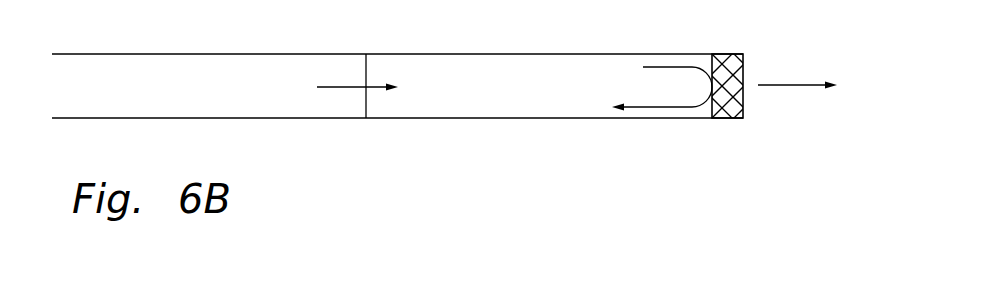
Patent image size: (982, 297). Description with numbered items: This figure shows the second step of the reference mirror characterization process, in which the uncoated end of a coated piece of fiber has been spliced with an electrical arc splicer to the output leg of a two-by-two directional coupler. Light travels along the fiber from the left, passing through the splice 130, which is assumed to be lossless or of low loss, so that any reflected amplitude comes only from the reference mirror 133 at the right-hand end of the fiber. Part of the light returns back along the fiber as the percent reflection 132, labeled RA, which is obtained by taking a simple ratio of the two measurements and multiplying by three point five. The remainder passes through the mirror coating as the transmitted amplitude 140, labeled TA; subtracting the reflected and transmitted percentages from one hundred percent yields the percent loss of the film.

The splice 130 is at (365, 68).
The percent reflection 132 is at (641, 104).
The reference mirror 133 is at (723, 119).
The transmitted amplitude 140 is at (797, 86).